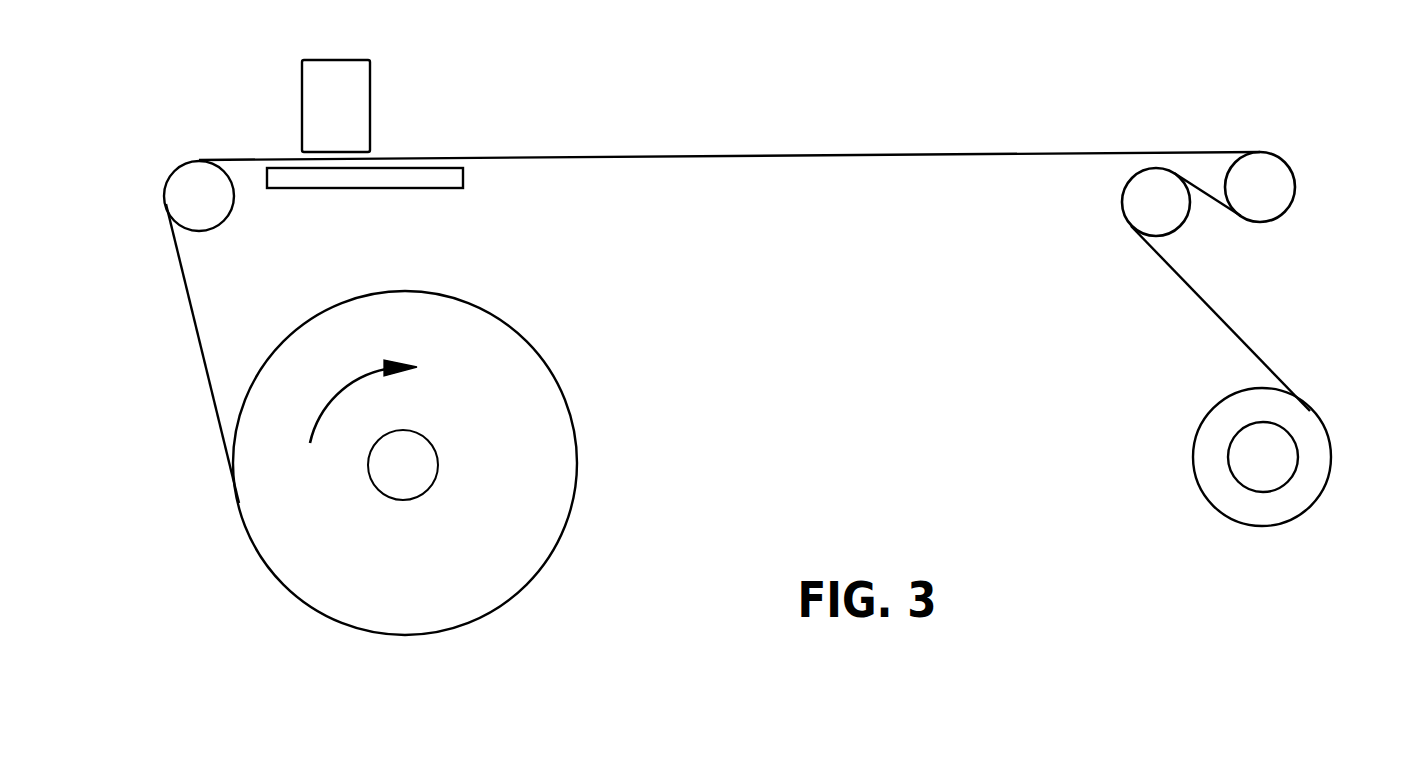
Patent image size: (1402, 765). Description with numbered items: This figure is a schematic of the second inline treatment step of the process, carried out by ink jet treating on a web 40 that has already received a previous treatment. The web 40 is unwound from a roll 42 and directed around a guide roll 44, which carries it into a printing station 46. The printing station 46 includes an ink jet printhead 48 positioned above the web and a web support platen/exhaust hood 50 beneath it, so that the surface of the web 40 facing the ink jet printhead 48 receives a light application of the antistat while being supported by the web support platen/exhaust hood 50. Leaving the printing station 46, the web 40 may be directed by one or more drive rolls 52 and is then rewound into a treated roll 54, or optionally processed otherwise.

The web 40 is at (190, 342).
The roll 42 is at (570, 445).
The guide roll 44 is at (217, 213).
The printing station 46 is at (403, 142).
The ink jet printhead 48 is at (322, 114).
The web support platen/exhaust hood 50 is at (463, 174).
The drive rolls 52 is at (1123, 220).
The treated roll 54 is at (1202, 492).